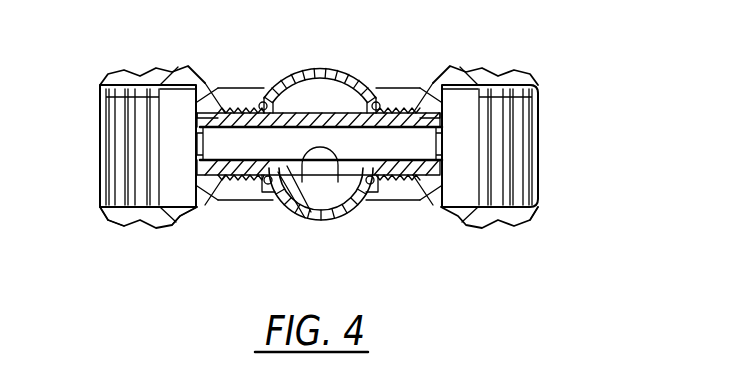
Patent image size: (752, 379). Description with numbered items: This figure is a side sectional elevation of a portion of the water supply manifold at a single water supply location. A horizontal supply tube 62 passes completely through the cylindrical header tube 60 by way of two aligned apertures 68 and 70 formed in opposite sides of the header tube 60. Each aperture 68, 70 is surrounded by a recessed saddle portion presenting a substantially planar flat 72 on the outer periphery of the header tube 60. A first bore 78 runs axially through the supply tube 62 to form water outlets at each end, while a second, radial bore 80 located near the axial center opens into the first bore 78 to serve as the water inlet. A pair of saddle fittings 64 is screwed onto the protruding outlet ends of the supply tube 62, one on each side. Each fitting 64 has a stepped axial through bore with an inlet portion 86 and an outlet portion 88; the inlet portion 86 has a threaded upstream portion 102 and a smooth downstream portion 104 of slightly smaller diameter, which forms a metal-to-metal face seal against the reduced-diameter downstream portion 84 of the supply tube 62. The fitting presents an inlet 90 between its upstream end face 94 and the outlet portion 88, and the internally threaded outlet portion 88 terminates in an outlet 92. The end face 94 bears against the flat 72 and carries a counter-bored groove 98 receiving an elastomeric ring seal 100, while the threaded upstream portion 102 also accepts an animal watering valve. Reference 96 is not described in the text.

The header tube 60 is at (321, 62).
The supply tube 62 is at (296, 98).
The saddle fitting 64 is at (137, 66).
The aperture 68 is at (285, 195).
The aperture 70 is at (344, 100).
The flat 72 is at (270, 184).
The first bore 78 is at (388, 128).
The second, radial bore 80 is at (324, 163).
The downstream portion 84 is at (428, 100).
The inlet portion 86 is at (217, 183).
The outlet portion 88 is at (539, 83).
The inlet 90 is at (200, 142).
The outlet 92 is at (118, 117).
The upstream end face 94 is at (211, 90).
The nut edge 96 is at (100, 208).
The counter-bored groove 98 is at (260, 106).
The elastomeric ring seal 100 is at (264, 102).
The threaded upstream portion 102 is at (250, 182).
The smooth downstream portion 104 is at (196, 214).